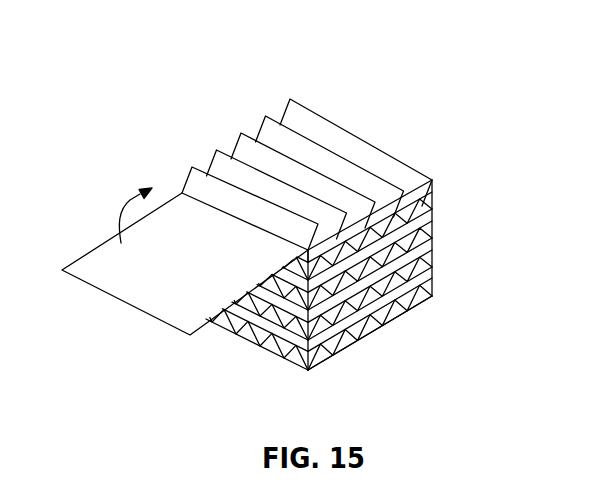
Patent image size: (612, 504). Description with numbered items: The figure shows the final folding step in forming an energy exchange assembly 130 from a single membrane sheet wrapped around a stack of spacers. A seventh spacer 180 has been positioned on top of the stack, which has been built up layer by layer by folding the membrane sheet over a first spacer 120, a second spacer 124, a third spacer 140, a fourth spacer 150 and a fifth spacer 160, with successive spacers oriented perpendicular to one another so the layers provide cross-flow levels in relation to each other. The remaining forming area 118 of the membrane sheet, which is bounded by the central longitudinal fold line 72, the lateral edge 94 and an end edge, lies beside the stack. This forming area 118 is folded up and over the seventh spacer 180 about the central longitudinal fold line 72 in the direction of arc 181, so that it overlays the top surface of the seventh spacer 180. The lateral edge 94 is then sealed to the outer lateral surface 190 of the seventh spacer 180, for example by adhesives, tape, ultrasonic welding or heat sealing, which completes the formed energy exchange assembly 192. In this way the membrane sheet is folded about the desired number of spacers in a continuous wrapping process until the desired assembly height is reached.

The formed energy exchange assembly 192 is at (405, 64).
The seventh spacer 180 is at (336, 124).
The outer lateral surface 190 is at (388, 152).
The fifth spacer 160 is at (433, 183).
The fourth spacer 150 is at (433, 208).
The third spacer 140 is at (433, 227).
The energy exchange assembly 130 is at (433, 243).
The second spacer 124 is at (433, 267).
The first spacer 120 is at (418, 302).
The arc 181 is at (118, 213).
The forming area 118 is at (206, 271).
The lateral edge 94 is at (123, 302).
The central longitudinal fold line 72 is at (302, 247).